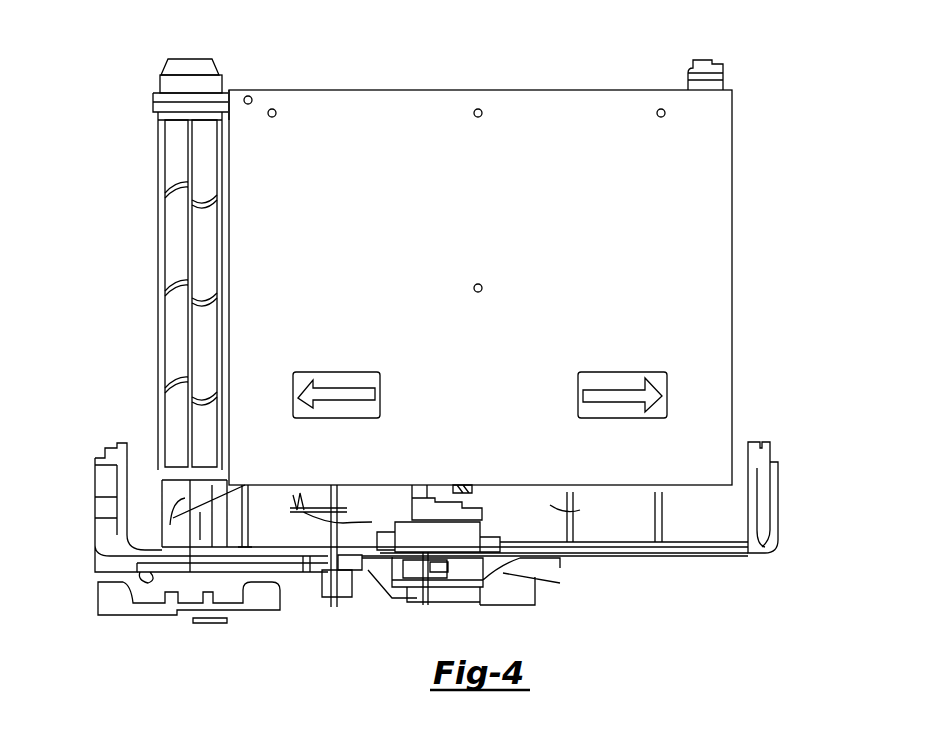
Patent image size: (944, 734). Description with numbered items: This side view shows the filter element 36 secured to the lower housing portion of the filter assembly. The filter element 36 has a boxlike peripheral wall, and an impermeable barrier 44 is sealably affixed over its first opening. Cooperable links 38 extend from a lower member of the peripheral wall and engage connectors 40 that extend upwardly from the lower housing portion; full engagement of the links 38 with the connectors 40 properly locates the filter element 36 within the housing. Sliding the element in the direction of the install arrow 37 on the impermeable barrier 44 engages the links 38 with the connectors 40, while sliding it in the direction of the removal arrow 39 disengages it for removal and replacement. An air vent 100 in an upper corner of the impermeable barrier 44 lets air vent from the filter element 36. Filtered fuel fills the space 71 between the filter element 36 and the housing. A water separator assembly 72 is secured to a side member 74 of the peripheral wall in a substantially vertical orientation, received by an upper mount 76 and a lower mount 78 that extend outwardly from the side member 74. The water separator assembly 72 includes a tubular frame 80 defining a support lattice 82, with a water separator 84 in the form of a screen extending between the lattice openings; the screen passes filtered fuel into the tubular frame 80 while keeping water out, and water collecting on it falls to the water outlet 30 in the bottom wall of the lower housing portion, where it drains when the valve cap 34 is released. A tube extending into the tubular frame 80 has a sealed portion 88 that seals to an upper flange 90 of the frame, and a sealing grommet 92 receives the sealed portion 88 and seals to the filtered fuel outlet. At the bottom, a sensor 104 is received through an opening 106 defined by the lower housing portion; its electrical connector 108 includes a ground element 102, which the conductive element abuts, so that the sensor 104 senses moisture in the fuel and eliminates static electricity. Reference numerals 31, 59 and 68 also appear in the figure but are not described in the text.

The water outlet 30 is at (213, 540).
The latch 31 is at (205, 525).
The valve cap 34 is at (108, 618).
The filter element 36 is at (736, 115).
The install arrow 37 is at (612, 372).
The cooperable links 38 is at (545, 492).
The removal arrow 39 is at (345, 372).
The connectors 40 is at (612, 522).
The impermeable barrier 44 is at (580, 233).
The fastener 59 is at (470, 488).
The tab 68 is at (705, 60).
The space 71 is at (140, 430).
The water separator assembly 72 is at (160, 178).
The side member 74 is at (233, 260).
The upper mount 76 is at (153, 103).
The lower mount 78 is at (175, 520).
The tubular frame 80 is at (158, 330).
The support lattice 82 is at (166, 205).
The water separator 84 is at (208, 335).
The sealed portion 88 is at (160, 80).
The upper flange 90 is at (160, 95).
The sealing grommet 92 is at (215, 62).
The air vent 100 is at (248, 100).
The ground element 102 is at (420, 505).
The sensor 104 is at (427, 600).
The opening 106 is at (500, 593).
The electrical connector 108 is at (530, 603).